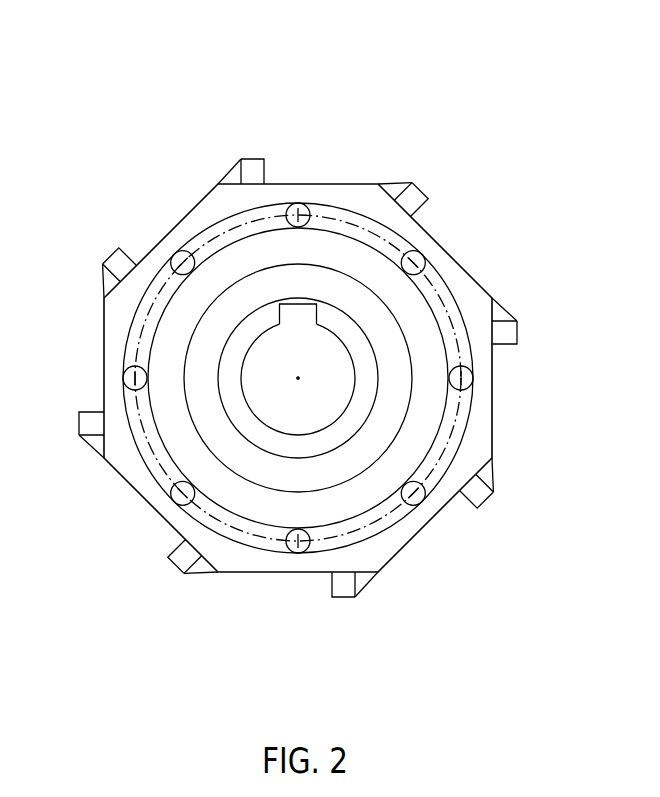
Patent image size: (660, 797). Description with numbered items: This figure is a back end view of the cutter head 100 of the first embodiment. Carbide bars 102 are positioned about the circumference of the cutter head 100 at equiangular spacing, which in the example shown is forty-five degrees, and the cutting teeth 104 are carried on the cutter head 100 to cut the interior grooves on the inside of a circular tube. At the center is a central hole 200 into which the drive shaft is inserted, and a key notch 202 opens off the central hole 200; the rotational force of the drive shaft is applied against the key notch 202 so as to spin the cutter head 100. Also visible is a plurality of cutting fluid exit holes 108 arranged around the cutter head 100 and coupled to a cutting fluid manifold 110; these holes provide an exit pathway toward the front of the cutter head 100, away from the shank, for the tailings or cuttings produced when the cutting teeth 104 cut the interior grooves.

The cutter head 100 is at (573, 60).
The carbide bar 102 is at (268, 170).
The cutting teeth 104 is at (248, 157).
The cutting fluid exit holes 108 is at (200, 199).
The cutting fluid manifold 110 is at (173, 252).
The central hole 200 is at (298, 379).
The key notch 202 is at (316, 302).